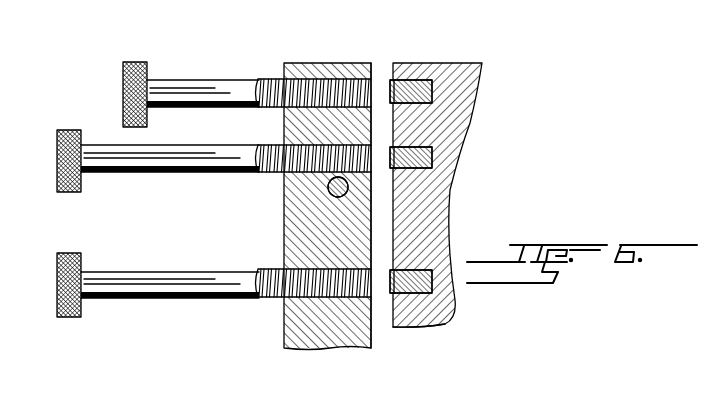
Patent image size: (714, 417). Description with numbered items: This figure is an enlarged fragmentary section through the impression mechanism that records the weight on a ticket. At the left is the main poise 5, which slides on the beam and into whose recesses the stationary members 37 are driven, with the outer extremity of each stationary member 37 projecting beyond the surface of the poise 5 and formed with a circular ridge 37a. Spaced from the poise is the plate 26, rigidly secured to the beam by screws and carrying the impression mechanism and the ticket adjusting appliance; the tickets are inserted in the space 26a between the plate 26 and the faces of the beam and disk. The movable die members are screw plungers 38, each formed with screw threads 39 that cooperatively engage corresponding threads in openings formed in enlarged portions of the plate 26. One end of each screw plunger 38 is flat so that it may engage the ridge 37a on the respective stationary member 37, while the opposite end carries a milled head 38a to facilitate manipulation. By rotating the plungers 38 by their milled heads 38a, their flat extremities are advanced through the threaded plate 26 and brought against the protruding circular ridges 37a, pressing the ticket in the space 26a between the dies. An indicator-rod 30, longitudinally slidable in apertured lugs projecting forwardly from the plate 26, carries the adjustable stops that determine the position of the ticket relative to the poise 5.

The main poise 5 is at (432, 324).
The plate 26 is at (325, 335).
The space 26a is at (382, 212).
The indicator-rod 30 is at (349, 187).
The stationary member 37 is at (419, 271).
The circular ridge 37a is at (385, 73).
The screw plunger 38 is at (130, 272).
The milled head 38a is at (66, 129).
The screw threads 39 is at (259, 268).